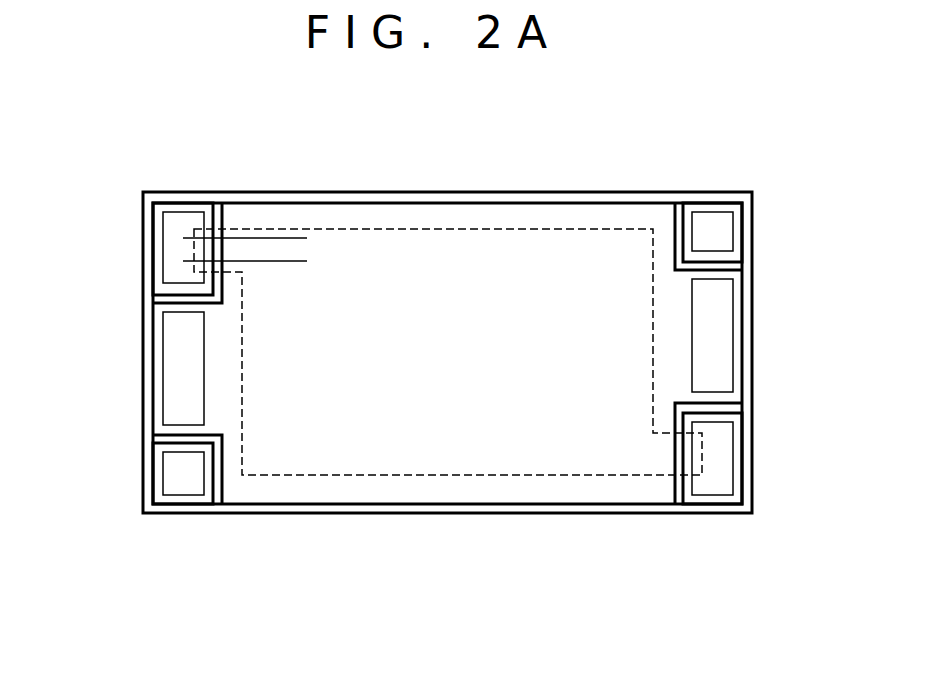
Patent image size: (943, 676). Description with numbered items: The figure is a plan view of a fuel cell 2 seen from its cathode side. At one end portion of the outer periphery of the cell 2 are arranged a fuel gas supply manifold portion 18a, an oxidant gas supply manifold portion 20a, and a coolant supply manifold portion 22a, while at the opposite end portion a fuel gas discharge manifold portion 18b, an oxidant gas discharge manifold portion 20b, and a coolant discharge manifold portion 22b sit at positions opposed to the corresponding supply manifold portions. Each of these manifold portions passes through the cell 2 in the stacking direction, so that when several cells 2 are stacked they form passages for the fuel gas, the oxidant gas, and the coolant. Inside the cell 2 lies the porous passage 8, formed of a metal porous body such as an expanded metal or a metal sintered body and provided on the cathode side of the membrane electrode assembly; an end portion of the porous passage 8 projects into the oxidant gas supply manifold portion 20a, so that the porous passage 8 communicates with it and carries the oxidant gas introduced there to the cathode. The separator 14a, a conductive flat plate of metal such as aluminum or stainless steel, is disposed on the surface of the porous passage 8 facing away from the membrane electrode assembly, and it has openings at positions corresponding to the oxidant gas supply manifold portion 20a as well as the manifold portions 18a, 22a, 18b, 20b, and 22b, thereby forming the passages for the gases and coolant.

The cell 2 is at (560, 170).
The porous passage 8 is at (603, 488).
The separator 14a is at (345, 496).
The fuel gas supply manifold portion 18a is at (168, 485).
The fuel gas discharge manifold portion 18b is at (708, 232).
The oxidant gas supply manifold portion 20a is at (176, 236).
The oxidant gas discharge manifold portion 20b is at (718, 462).
The coolant supply manifold portion 22a is at (168, 386).
The coolant discharge manifold portion 22b is at (712, 330).